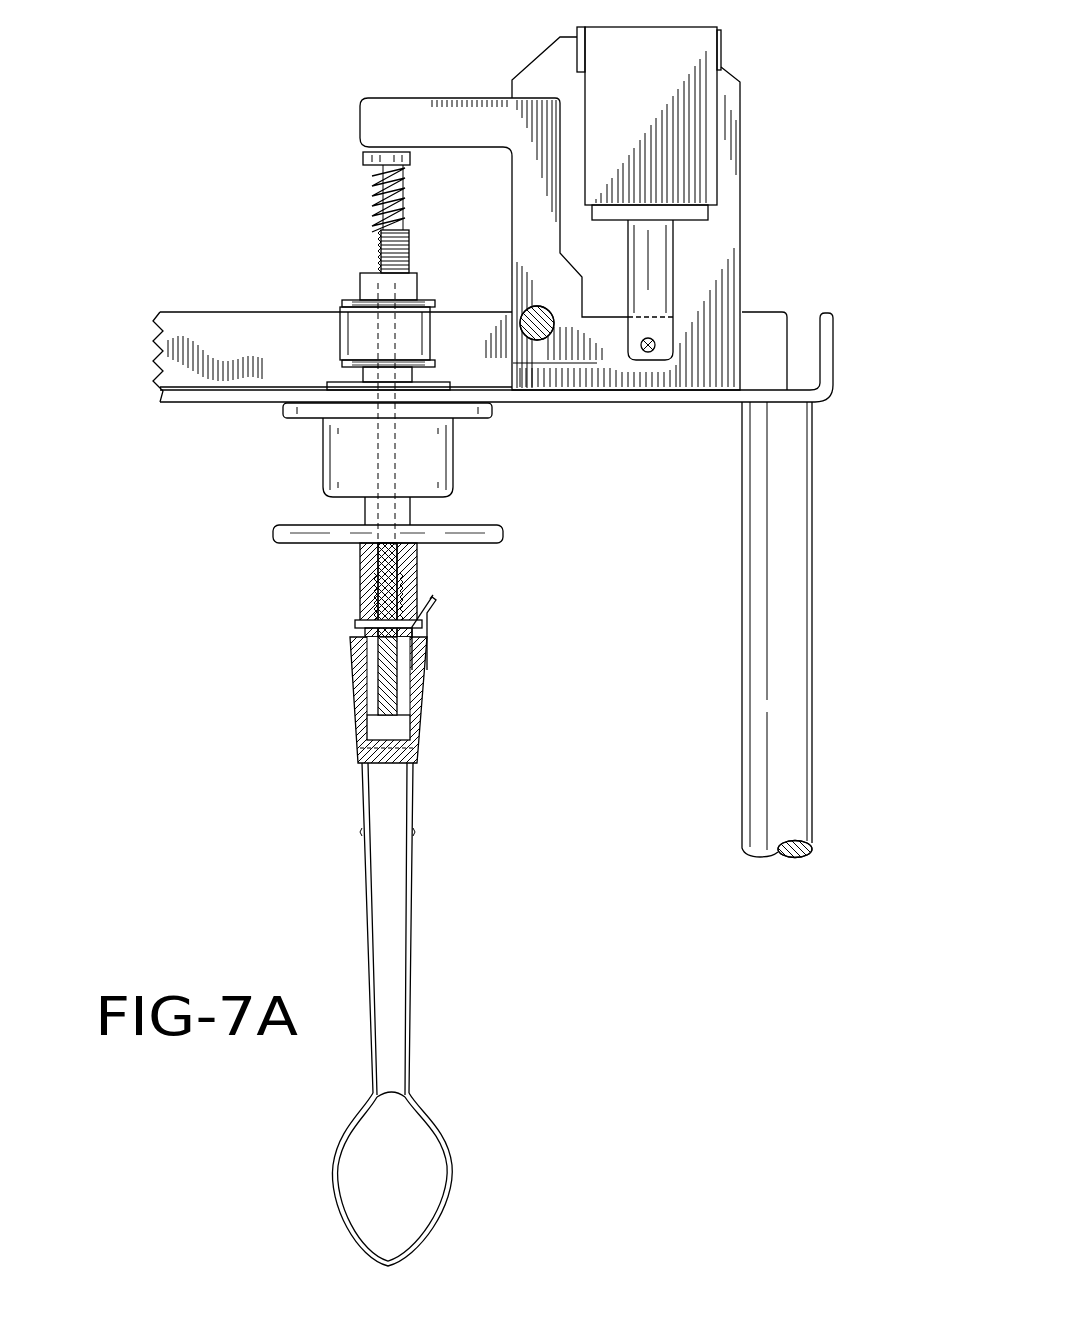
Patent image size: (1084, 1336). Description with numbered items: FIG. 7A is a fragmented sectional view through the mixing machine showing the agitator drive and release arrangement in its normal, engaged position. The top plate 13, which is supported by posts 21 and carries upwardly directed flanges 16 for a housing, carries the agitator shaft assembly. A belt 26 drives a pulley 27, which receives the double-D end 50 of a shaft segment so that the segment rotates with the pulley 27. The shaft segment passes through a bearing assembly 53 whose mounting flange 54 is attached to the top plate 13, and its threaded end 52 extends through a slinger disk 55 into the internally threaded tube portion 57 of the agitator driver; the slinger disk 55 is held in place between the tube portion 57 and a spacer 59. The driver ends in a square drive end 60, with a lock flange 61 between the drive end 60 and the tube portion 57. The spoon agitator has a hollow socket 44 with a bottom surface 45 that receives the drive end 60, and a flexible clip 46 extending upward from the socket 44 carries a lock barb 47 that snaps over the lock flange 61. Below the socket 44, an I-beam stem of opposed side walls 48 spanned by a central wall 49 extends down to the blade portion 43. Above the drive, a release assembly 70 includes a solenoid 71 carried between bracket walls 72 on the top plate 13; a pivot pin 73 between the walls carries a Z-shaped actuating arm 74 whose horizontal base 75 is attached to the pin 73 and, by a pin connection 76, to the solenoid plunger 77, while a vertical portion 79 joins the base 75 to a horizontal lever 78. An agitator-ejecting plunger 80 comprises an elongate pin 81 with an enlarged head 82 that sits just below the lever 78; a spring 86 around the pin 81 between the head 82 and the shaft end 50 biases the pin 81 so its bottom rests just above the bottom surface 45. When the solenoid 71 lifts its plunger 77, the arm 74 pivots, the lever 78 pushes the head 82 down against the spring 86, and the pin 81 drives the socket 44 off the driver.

The top plate 13 is at (208, 397).
The upwardly directed flanges 16 is at (217, 320).
The posts 21 is at (790, 547).
The belt 26 is at (340, 340).
The pulley 27 is at (405, 285).
The blade portion 43 is at (395, 1190).
The socket 44 is at (339, 703).
The bottom surface 45 is at (383, 736).
The flexible clip 46 is at (477, 637).
The lock barb 47 is at (433, 600).
The side walls 48 is at (362, 826).
The central wall 49 is at (387, 930).
The end of shaft segment 50 is at (375, 255).
The threaded end 52 is at (372, 580).
The bearing assembly 53 is at (423, 463).
The mounting flange 54 is at (310, 410).
The slinger disk 55 is at (500, 532).
The internally threaded tube portion 57 is at (408, 587).
The spacer 59 is at (370, 513).
The square drive end 60 is at (373, 687).
The lock flange 61 is at (358, 622).
The release assembly 70 is at (722, 243).
The solenoid 71 is at (655, 72).
The bracket walls 72 is at (727, 155).
The pivot pin 73 is at (536, 341).
The actuating arm 74 is at (586, 224).
The base 75 is at (600, 340).
The pin connection 76 is at (647, 353).
The plunger 77 is at (653, 278).
The lever 78 is at (390, 118).
The vertical portion 79 is at (533, 212).
The agitator-ejecting plunger 80 is at (348, 201).
The pin 81 is at (387, 205).
The head 82 is at (377, 153).
The spring 86 is at (385, 203).